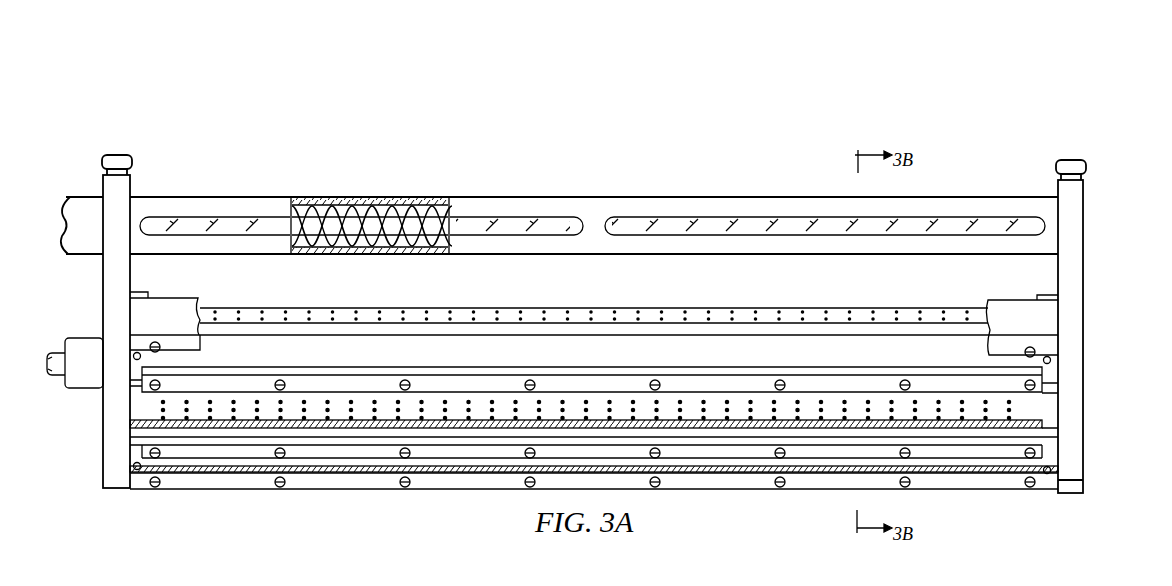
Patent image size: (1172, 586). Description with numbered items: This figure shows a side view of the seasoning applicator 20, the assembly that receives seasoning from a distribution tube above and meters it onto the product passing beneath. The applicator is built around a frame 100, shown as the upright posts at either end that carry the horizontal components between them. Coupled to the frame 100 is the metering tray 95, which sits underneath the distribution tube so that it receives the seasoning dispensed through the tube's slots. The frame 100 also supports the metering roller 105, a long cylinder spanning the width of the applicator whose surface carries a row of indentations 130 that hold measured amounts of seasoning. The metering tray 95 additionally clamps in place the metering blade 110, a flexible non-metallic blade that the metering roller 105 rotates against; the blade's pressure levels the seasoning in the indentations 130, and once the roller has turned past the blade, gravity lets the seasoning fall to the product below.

The seasoning applicator 20 is at (745, 51).
The metering tray 95 is at (582, 352).
The frame 100 is at (102, 462).
The metering roller 105 is at (440, 308).
The metering blade 110 is at (150, 395).
The indentations 130 is at (767, 315).